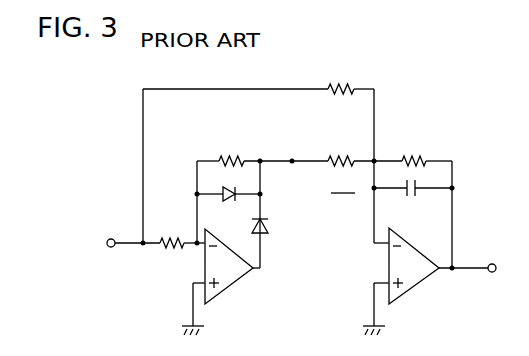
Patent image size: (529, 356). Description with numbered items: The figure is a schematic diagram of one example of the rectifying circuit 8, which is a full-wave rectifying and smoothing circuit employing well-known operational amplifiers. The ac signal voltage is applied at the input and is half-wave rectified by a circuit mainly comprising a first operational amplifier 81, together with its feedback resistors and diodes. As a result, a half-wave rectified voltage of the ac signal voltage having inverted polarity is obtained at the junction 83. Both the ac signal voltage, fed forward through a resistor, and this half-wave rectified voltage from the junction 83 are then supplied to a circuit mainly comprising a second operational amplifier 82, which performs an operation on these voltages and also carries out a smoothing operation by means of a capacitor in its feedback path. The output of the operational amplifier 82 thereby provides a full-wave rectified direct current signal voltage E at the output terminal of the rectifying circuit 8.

The rectifying circuit 8 is at (92, 115).
The operational amplifier 81 is at (225, 289).
The operational amplifier 82 is at (415, 287).
The junction 83 is at (291, 163).